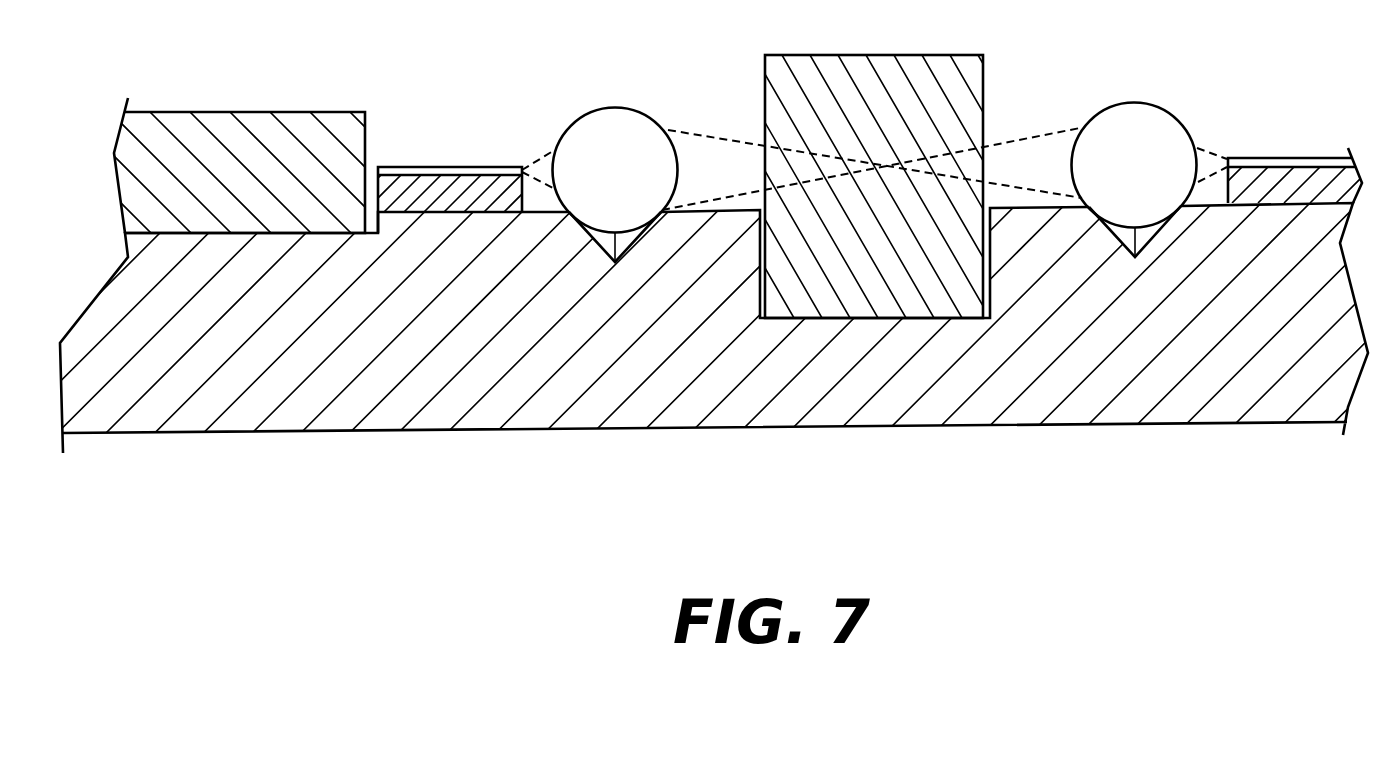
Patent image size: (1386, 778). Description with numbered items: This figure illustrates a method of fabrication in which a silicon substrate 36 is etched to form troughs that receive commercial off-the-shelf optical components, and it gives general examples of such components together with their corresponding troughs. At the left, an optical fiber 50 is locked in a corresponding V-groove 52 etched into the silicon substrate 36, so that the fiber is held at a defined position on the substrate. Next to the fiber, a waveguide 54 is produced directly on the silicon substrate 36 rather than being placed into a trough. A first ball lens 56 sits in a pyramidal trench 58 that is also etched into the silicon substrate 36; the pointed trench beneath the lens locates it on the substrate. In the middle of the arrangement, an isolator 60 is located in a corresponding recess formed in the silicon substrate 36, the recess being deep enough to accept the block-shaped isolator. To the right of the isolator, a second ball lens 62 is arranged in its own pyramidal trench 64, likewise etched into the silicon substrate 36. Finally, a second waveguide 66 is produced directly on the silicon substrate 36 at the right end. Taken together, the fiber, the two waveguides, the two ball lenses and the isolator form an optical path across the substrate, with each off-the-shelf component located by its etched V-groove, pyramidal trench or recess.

The silicon substrate 36 is at (860, 385).
The optical fiber 50 is at (242, 112).
The V-groove 52 is at (376, 233).
The waveguide 54 is at (453, 167).
The ball lens 56 is at (648, 107).
The pyramidal trench 58 is at (600, 255).
The isolator 60 is at (917, 55).
The ball lens 62 is at (1182, 121).
The pyramidal trench 64 is at (1150, 243).
The waveguide 66 is at (1294, 158).